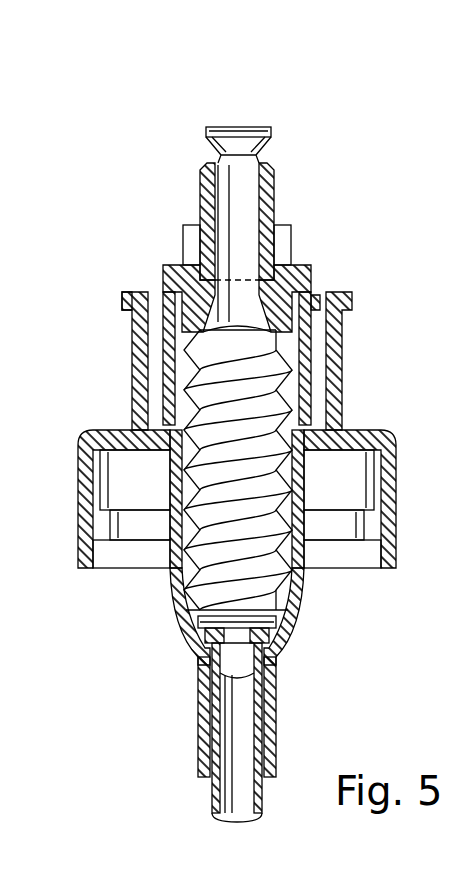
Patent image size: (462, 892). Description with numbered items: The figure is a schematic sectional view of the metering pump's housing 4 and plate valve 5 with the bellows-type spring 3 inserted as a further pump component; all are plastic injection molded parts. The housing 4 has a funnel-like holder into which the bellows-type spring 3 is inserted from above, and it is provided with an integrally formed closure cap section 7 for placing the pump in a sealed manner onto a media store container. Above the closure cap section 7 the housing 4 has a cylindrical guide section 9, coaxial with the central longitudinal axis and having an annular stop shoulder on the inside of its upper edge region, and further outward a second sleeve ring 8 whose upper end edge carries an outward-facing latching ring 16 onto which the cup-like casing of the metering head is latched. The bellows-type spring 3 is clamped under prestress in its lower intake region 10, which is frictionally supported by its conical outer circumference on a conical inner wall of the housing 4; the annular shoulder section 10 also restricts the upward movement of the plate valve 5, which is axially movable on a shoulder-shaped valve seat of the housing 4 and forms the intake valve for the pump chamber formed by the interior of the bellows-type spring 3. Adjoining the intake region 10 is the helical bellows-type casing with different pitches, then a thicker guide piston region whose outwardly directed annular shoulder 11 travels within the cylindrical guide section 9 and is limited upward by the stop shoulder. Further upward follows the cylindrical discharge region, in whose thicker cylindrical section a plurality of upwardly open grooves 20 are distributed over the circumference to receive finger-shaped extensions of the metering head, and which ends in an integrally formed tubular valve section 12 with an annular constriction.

The bellows-type spring 3 is at (200, 402).
The housing 4 is at (182, 637).
The plate valve 5 is at (283, 641).
The closure cap section 7 is at (394, 525).
The second sleeve ring 8 is at (138, 367).
The cylindrical guide section 9 is at (312, 268).
The intake region 10 is at (283, 602).
The annular shoulder 11 is at (300, 313).
The tubular valve section 12 is at (262, 146).
The latching ring 16 is at (128, 300).
The grooves 20 is at (192, 243).